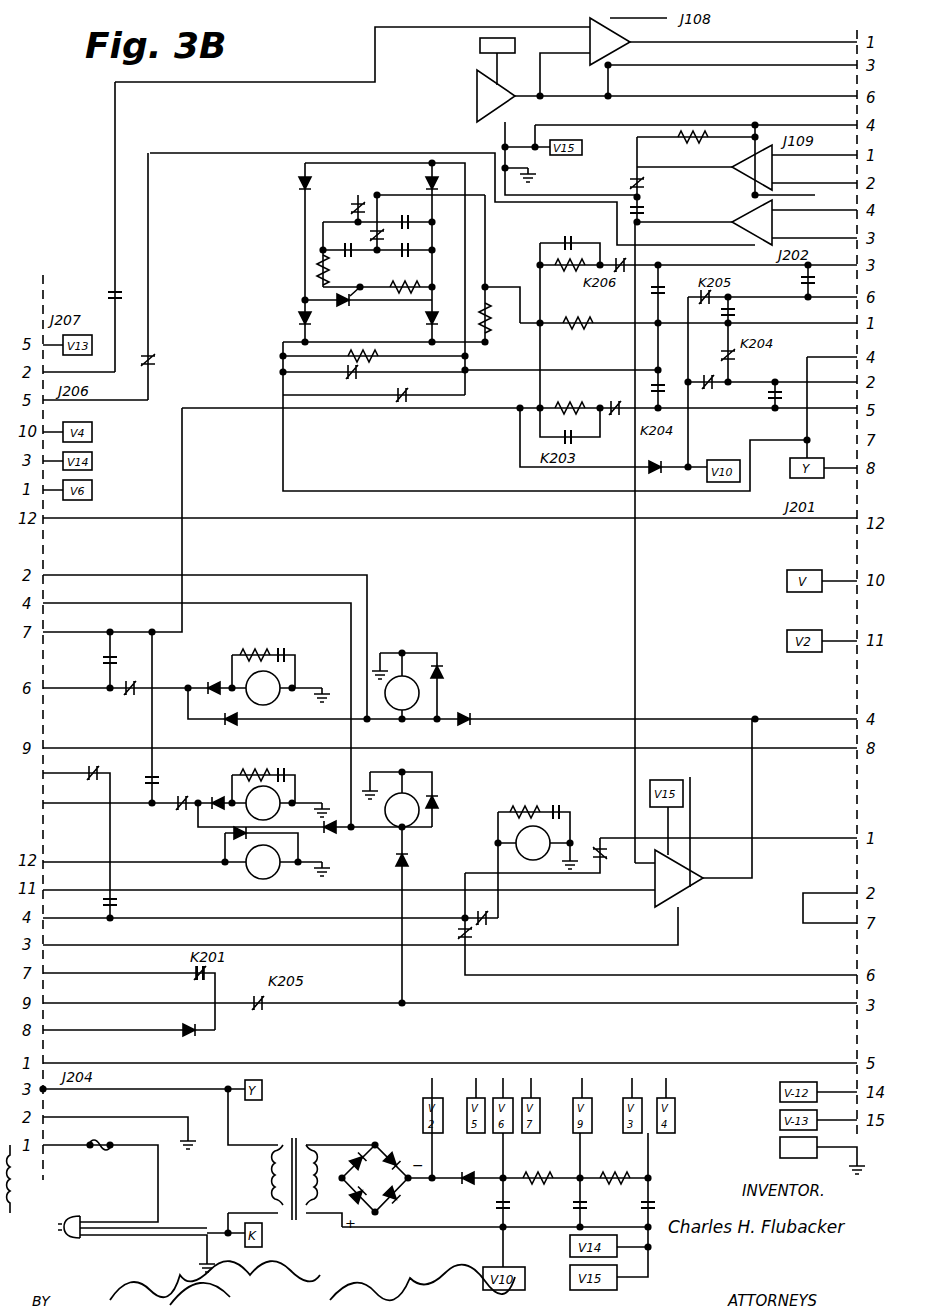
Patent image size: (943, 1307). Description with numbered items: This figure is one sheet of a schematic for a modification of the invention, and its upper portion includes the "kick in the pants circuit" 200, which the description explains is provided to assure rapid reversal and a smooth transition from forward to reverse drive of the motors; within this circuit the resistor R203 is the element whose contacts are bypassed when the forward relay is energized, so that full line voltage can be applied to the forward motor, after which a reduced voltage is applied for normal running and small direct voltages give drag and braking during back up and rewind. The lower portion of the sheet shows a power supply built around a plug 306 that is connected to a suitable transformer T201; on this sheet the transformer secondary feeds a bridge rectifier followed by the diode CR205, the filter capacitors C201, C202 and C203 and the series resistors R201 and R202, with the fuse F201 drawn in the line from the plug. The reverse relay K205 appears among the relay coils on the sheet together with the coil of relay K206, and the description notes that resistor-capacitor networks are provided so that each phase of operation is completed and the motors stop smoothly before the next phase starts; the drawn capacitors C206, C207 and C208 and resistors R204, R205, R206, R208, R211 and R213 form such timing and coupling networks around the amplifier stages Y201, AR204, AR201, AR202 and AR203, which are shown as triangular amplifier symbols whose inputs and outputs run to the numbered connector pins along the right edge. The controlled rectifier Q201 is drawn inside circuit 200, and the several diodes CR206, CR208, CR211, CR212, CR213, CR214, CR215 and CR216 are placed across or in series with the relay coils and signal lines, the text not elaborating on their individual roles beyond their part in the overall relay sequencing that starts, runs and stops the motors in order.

The kick in the pants circuit 200 is at (348, 277).
The plug 306 is at (76, 1222).
The reverse relay K205 is at (432, 682).
The relay K206 coil K206 is at (555, 853).
The amplifier Y201 is at (477, 93).
The amplifier AR-204 AR204 is at (622, 46).
The amplifier AR201 is at (747, 167).
The amplifier AR202 is at (747, 222).
The amplifier AR203 is at (760, 882).
The resistor R201 is at (541, 1167).
The resistor R202 is at (615, 1167).
The resistor R203 is at (374, 360).
The resistor R204 is at (688, 331).
The resistor R205 is at (502, 271).
The resistor R206 is at (400, 292).
The resistor R208 is at (522, 803).
The resistor R211 is at (726, 162).
The resistor R213 is at (584, 397).
The capacitor C201 is at (473, 1203).
The capacitor C202 is at (554, 1198).
The capacitor C203 is at (625, 1198).
The capacitor C206 is at (807, 291).
The capacitor C207 is at (750, 395).
The capacitor C208 is at (573, 805).
The diode CR205 is at (463, 1167).
The diode CR206 is at (208, 840).
The diode CR208 is at (424, 915).
The diode CR211 is at (212, 1038).
The diode CR212 is at (459, 662).
The diode CR213 is at (486, 729).
The diode CR214 is at (522, 716).
The diode CR215 is at (196, 675).
The diode CR216 is at (613, 449).
The SCR Q201 is at (345, 312).
The transformer T201 is at (191, 1171).
The fuse F201 is at (93, 1155).